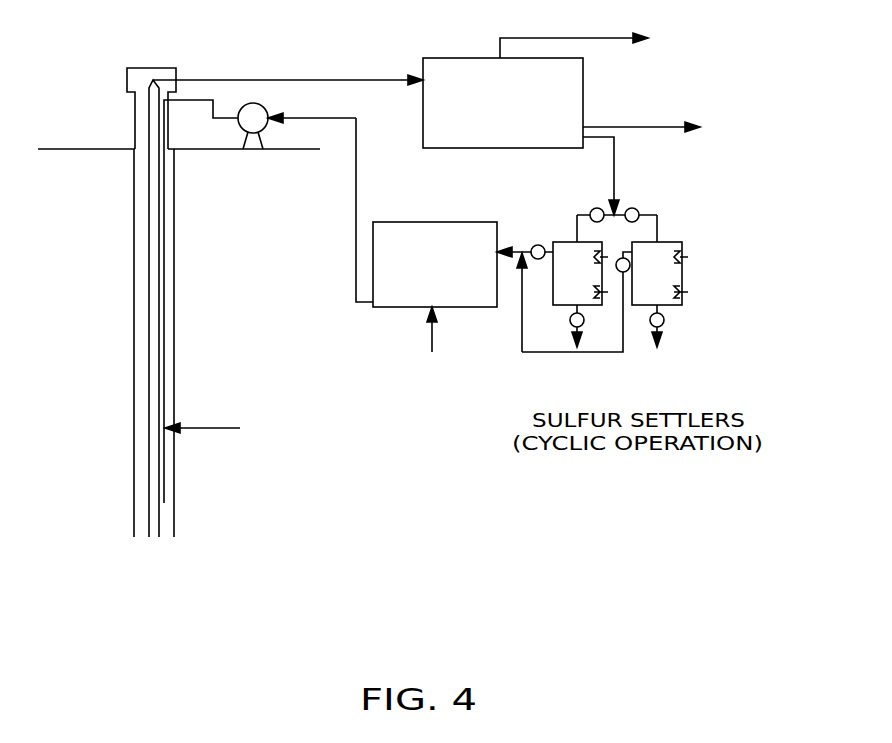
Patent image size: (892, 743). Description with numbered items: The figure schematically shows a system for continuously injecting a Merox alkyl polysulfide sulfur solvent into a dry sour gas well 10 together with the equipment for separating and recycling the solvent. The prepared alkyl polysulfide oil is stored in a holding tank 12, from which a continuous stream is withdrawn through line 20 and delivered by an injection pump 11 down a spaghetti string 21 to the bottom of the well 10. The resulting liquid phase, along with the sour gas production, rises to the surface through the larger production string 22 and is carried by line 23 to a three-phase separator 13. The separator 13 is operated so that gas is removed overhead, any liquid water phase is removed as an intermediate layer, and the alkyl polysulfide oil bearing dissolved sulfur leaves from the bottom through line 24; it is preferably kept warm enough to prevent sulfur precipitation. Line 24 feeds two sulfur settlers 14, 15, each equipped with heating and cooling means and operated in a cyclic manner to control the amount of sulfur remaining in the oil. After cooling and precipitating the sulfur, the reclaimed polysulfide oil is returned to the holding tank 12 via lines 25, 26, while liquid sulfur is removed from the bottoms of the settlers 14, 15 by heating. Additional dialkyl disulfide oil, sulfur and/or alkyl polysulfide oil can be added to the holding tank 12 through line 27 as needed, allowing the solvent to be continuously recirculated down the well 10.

The sour gas well 10 is at (142, 368).
The injection pump 11 is at (255, 110).
The holding tank 12 is at (432, 222).
The three-phase separator 13 is at (435, 70).
The sulfur settler 14 is at (666, 246).
The sulfur settler 15 is at (575, 252).
The line 20 is at (356, 182).
The spaghetti string 21 is at (163, 356).
The production string 22 is at (147, 139).
The line 23 is at (280, 80).
The line 24 is at (614, 154).
The line 25 is at (524, 250).
The line 26 is at (538, 352).
The line 27 is at (432, 345).